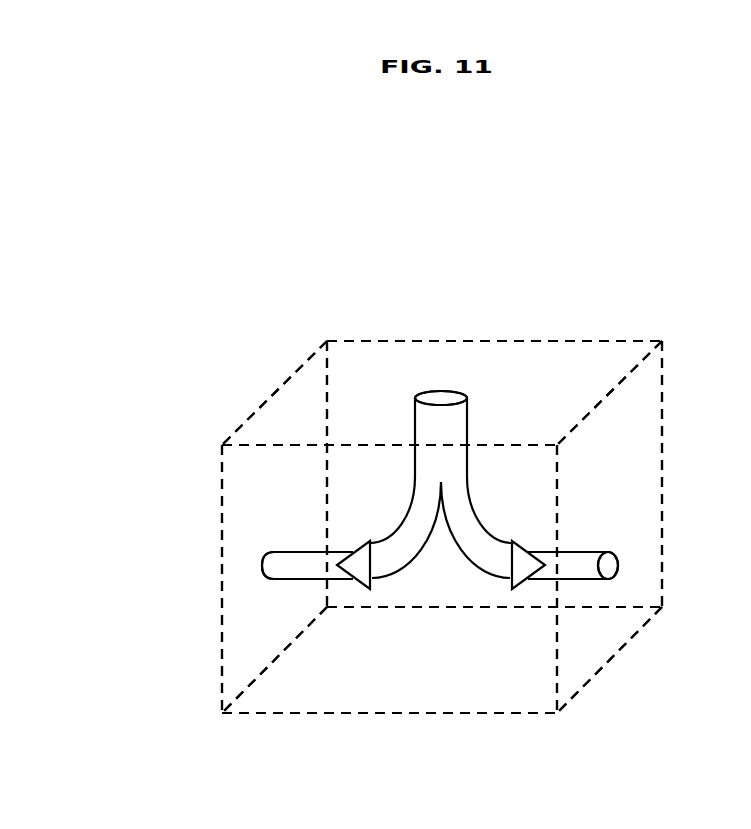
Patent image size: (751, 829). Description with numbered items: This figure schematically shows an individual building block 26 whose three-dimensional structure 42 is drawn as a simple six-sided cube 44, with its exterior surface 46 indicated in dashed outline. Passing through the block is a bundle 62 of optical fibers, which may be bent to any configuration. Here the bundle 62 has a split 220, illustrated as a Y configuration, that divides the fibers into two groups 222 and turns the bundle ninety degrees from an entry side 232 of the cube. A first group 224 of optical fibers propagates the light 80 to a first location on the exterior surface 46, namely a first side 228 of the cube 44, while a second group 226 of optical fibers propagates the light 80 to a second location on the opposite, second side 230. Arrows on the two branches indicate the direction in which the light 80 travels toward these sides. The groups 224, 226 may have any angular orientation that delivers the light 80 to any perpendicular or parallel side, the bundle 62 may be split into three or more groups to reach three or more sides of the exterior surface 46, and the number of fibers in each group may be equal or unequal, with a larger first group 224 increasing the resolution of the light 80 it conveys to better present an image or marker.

The building block 26 is at (134, 296).
The three-dimensional structure 42 is at (300, 367).
The six-sided cube 44 is at (663, 341).
The exterior surface 46 is at (604, 362).
The bundle of optical fibers 62 is at (438, 396).
The light 80 is at (357, 553).
The split 220 is at (484, 482).
The groups of optical fibers 222 is at (280, 552).
The first group of optical fibers 224 is at (612, 570).
The second group of optical fibers 226 is at (262, 566).
The first side 228 is at (578, 673).
The second side 230 is at (243, 636).
The entry side 232 is at (357, 358).